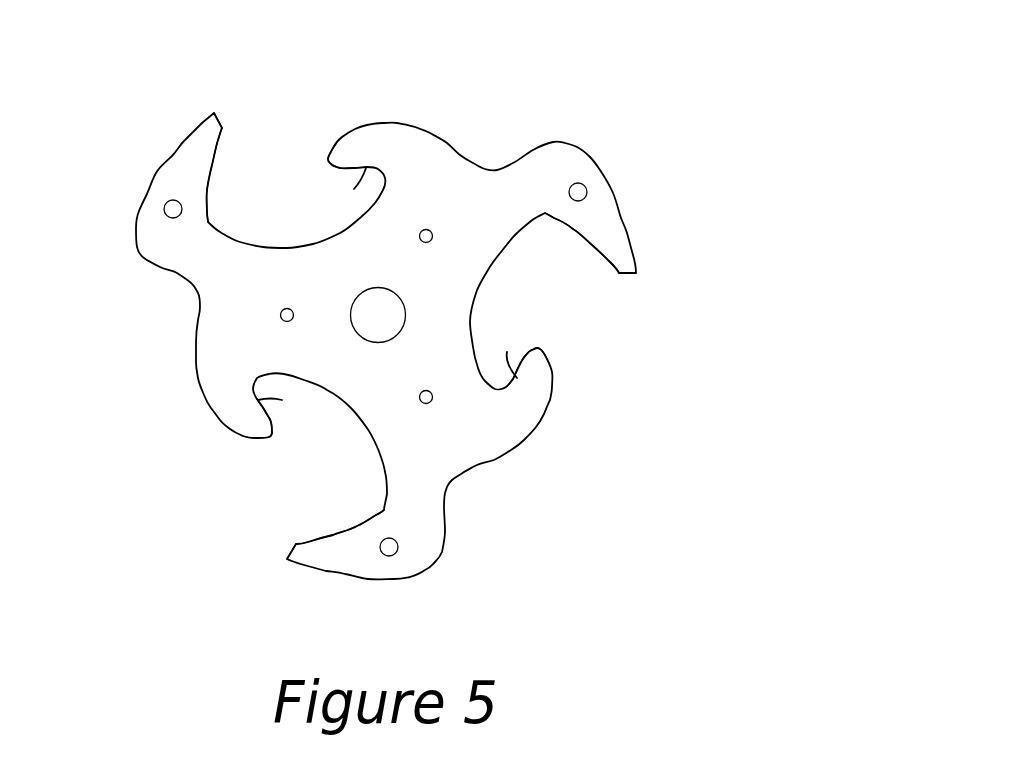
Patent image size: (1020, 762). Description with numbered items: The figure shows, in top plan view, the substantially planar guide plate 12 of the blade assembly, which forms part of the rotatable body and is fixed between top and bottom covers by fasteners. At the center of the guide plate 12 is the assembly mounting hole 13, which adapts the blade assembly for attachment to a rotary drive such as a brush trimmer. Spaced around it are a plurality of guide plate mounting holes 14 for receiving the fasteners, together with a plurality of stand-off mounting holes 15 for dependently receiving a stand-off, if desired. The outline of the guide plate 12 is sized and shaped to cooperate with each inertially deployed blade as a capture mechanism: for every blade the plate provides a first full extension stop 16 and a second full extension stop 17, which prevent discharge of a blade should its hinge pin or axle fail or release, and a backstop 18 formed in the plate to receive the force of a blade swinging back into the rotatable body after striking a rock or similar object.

The guide plate 12 is at (548, 51).
The assembly mounting hole 13 is at (388, 301).
The guide plate mounting hole 14 is at (166, 210).
The stand-off mounting hole 15 is at (430, 228).
The first full extension stop 16 is at (222, 124).
The second full extension stop 17 is at (355, 178).
The backstop 18 is at (400, 125).